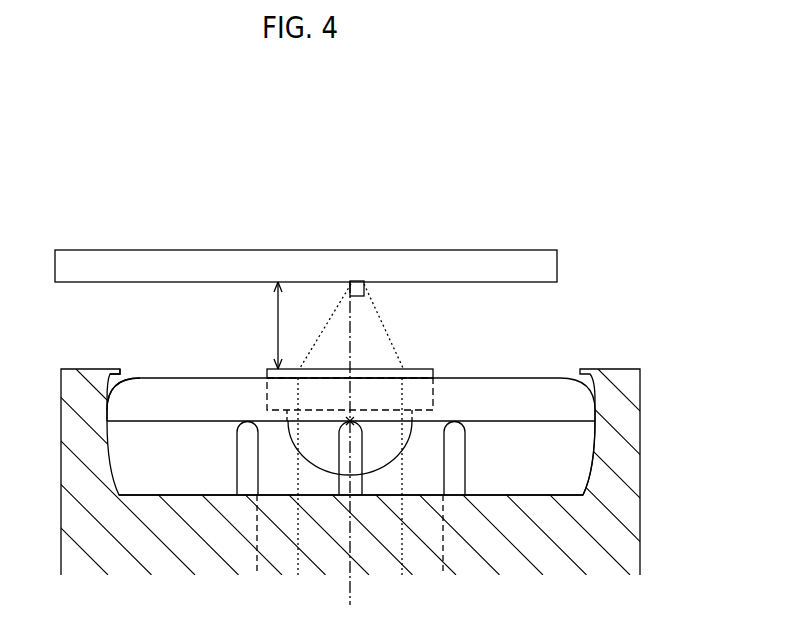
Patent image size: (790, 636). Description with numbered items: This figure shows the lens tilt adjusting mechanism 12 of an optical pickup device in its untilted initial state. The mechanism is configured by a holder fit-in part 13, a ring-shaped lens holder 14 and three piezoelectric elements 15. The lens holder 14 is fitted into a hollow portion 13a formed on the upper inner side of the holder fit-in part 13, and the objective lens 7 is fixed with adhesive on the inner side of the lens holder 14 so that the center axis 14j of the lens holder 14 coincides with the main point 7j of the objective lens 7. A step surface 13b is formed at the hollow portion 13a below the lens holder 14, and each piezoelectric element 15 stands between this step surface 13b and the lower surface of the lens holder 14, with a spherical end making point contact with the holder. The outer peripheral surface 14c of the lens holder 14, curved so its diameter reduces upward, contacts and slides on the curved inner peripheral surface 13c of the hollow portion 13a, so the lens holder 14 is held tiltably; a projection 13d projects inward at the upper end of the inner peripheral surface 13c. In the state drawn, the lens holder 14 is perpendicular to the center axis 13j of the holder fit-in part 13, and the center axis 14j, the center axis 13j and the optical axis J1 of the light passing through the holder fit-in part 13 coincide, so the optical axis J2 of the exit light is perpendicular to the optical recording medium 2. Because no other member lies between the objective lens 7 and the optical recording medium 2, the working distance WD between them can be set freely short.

The optical recording medium 2 is at (483, 250).
The lens tilt adjusting mechanism 12 is at (655, 313).
The holder fit-in part 13 is at (641, 390).
The hollow portion 13a is at (565, 443).
The step surface 13b is at (540, 495).
The inner peripheral surface 13c is at (110, 433).
The projection 13d is at (122, 373).
The center axis of the holder fit-in part 13j is at (350, 521).
The lens holder 14 is at (497, 378).
The outer peripheral surface 14c is at (112, 400).
The center axis of the lens holder 14j is at (348, 391).
The objective lens 7 is at (415, 369).
The main point of the objective lens 7j is at (352, 419).
The piezoelectric element 15 is at (237, 470).
The optical axis J1 is at (350, 598).
The optical axis of the exit light J2 is at (350, 336).
The working distance WD is at (262, 325).